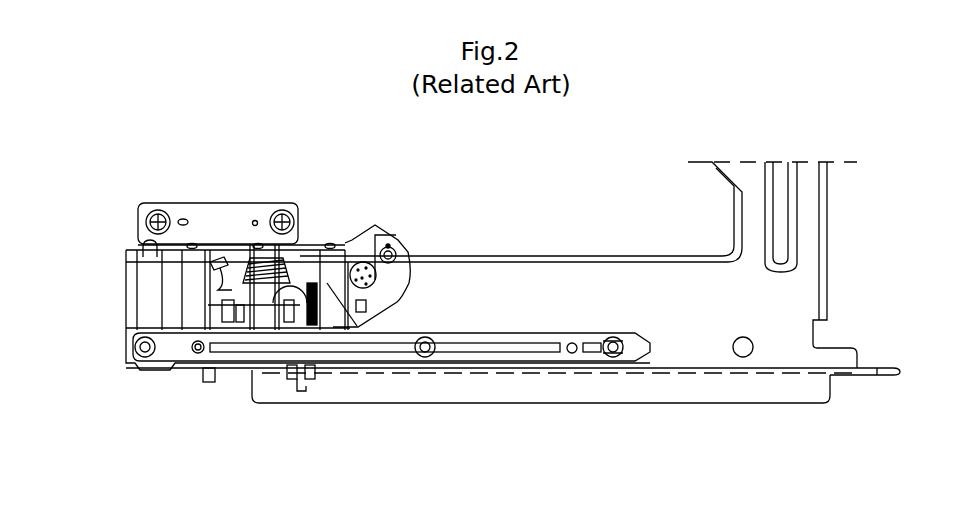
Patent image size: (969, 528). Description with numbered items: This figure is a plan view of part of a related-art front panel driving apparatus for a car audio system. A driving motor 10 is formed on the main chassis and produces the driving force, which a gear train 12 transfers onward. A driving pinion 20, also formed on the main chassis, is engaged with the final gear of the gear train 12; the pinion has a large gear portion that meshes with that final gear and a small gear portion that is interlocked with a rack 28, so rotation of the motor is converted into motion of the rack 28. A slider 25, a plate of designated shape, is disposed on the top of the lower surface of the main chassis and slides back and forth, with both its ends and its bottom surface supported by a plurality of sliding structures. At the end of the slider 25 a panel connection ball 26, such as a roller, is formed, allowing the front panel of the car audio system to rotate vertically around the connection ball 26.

The driving motor 10 is at (368, 226).
The gear train 12 is at (302, 197).
The driving pinion 20 is at (168, 318).
The slider 25 is at (606, 277).
The panel connection ball 26 is at (880, 372).
The rack 28 is at (507, 362).